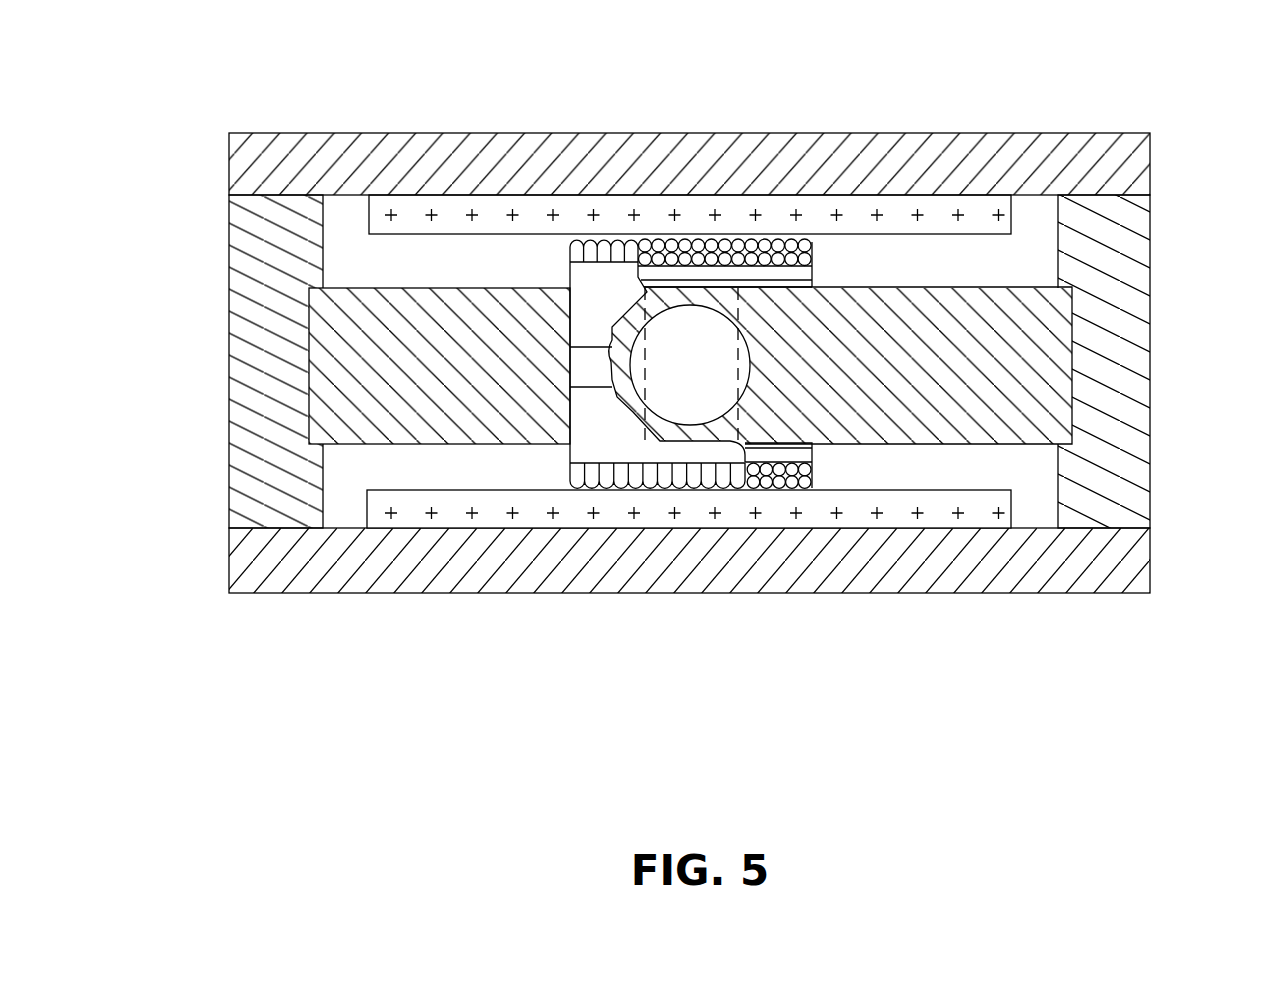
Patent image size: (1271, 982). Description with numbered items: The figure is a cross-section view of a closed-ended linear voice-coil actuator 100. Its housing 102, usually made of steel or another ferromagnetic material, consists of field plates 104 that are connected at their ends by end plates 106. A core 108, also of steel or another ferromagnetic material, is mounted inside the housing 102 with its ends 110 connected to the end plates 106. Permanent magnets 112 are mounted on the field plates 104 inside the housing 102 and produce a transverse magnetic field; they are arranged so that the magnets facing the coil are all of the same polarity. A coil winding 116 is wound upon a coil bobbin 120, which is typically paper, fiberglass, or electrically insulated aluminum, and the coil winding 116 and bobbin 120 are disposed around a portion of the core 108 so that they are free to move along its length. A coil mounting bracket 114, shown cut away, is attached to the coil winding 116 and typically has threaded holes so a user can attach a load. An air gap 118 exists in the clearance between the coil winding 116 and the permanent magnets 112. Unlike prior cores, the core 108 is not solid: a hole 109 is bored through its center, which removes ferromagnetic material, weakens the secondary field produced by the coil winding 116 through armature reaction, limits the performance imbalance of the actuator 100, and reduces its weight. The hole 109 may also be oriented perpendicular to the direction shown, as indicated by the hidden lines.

The linear voice-coil actuator 100 is at (685, 408).
The housing 102 is at (1142, 107).
The field plates 104 is at (253, 103).
The end plates 106 is at (1148, 356).
The core 108 is at (666, 358).
The hole 109 is at (724, 365).
The ends 110 is at (305, 332).
The permanent magnets 112 is at (736, 529).
The coil mounting bracket 114 is at (541, 272).
The coil winding 116 is at (833, 254).
The air gap 118 is at (578, 242).
The coil bobbin 120 is at (833, 455).